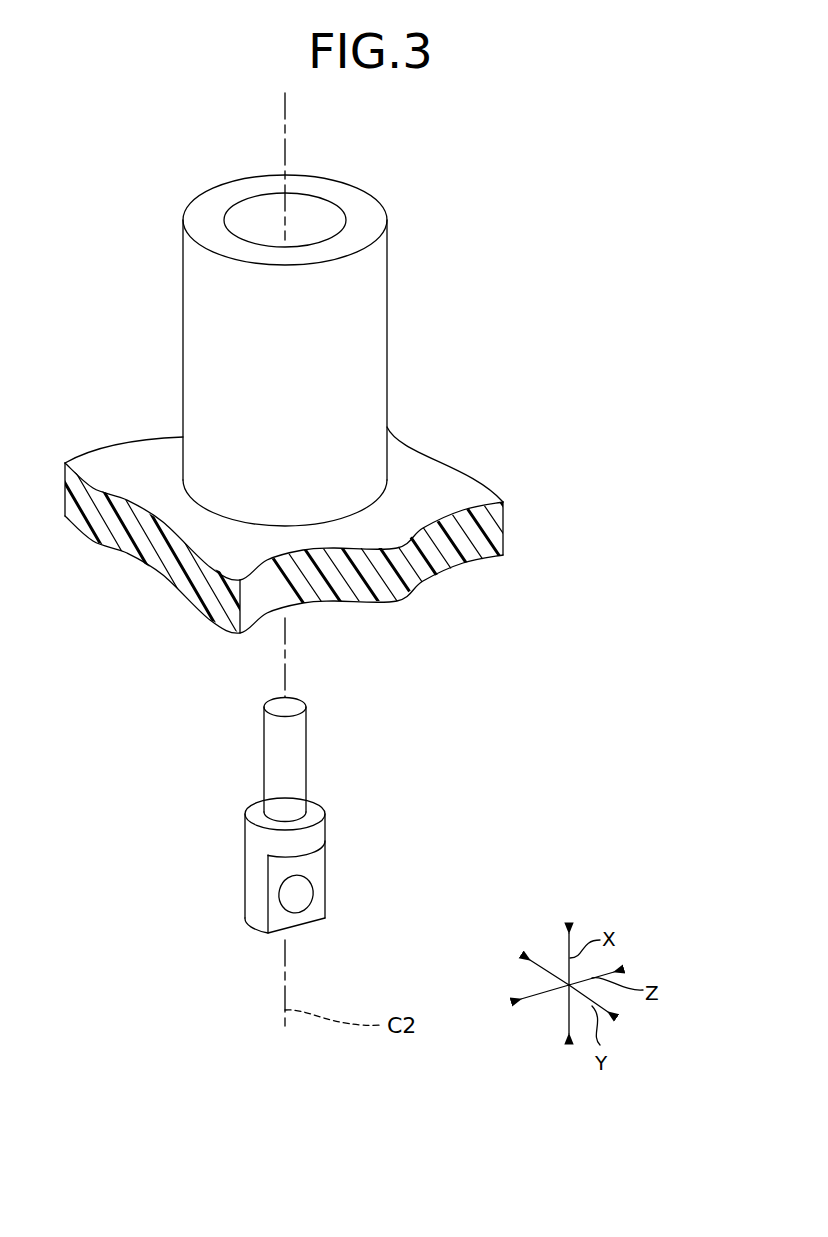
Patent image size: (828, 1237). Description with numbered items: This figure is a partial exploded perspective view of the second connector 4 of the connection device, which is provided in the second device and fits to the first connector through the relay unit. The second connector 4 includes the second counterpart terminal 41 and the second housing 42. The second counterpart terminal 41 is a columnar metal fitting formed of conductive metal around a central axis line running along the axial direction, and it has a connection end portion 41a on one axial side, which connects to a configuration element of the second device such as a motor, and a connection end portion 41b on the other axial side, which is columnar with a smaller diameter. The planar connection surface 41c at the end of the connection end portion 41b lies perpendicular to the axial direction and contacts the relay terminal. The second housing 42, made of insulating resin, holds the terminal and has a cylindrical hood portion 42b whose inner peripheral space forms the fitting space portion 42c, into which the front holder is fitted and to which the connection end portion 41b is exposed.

The second connector 4 is at (602, 535).
The second counterpart terminal 41 is at (318, 790).
The connection end portion 41a is at (283, 870).
The connection end portion 41b is at (275, 738).
The connection surface 41c is at (292, 704).
The second housing 42 is at (508, 528).
The hood portion 42b is at (388, 344).
The fitting space portion 42c is at (308, 214).